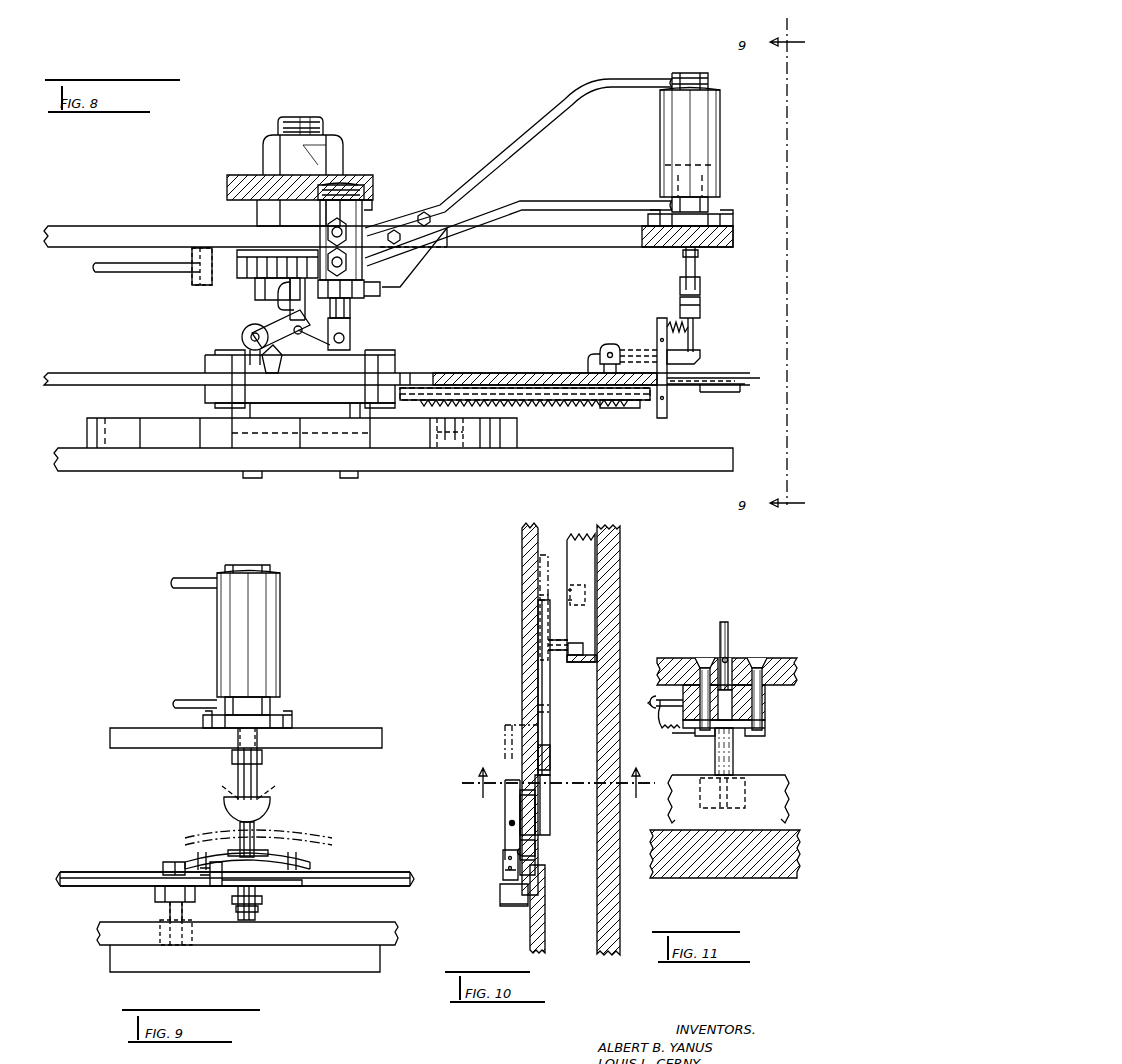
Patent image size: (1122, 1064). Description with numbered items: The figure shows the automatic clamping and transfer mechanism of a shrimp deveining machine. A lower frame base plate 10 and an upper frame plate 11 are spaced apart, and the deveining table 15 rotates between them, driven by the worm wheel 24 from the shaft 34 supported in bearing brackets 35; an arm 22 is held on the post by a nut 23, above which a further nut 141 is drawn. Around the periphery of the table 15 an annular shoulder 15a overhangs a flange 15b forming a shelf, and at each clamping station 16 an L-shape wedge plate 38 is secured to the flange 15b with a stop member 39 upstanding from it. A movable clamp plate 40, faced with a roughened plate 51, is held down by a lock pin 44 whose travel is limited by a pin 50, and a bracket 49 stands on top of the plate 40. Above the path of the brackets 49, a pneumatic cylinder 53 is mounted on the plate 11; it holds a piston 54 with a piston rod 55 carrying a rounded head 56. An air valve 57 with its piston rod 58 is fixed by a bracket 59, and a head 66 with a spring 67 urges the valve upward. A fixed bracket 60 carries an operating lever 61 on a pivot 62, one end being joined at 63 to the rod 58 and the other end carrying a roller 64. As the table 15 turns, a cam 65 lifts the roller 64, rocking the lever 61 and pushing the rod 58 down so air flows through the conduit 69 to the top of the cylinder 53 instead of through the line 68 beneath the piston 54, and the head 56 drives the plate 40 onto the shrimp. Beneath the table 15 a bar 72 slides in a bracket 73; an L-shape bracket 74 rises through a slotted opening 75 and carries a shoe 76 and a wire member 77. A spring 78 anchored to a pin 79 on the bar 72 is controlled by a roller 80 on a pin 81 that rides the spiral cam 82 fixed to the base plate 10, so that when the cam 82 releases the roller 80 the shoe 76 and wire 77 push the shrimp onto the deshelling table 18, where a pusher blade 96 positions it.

In FIG. 8, the lower frame base plate 10 is at (421, 471).
In FIG. 9, the lower frame base plate 10 is at (165, 972).
In FIG. 10, the lower frame base plate 10 is at (621, 583).
In FIG. 11, the lower frame base plate 10 is at (684, 878).
In FIG. 8, the upper frame plate 11 is at (567, 247).
In FIG. 9, the upper frame plate 11 is at (338, 732).
In FIG. 10, the upper frame plate 11 is at (558, 770).
In FIG. 8, the deveining table 15 is at (516, 373).
In FIG. 9, the deveining table 15 is at (386, 872).
In FIG. 10, the deveining table 15 is at (521, 659).
In FIG. 11, the deveining table 15 is at (670, 658).
In FIG. 9, the annular shoulder 15a is at (80, 876).
In FIG. 9, the flange 15b is at (76, 888).
In FIG. 8, the shrimp clamping station 16 is at (650, 341).
In FIG. 10, the deshelling table 18 is at (530, 942).
In FIG. 8, the arm 22 is at (268, 178).
In FIG. 8, the nut 23 is at (268, 143).
In FIG. 8, the worm wheel 24 is at (247, 258).
In FIG. 8, the shaft 34 is at (118, 273).
In FIG. 8, the bearing bracket 35 is at (195, 280).
In FIG. 8, the L-shape wedge plate 38 is at (737, 383).
In FIG. 9, the L-shape wedge plate 38 is at (300, 884).
In FIG. 10, the L-shape wedge plate 38 is at (530, 855).
In FIG. 9, the stop member 39 is at (212, 880).
In FIG. 8, the movable clamp plate 40 is at (702, 357).
In FIG. 9, the movable clamp plate 40 is at (305, 857).
In FIG. 9, the lock pin 44 is at (262, 899).
In FIG. 8, the bracket 49 is at (694, 332).
In FIG. 9, the bracket 49 is at (258, 832).
In FIG. 9, the pin 50 is at (258, 909).
In FIG. 9, the roughened plate 51 is at (300, 866).
In FIG. 8, the pneumatic cylinder 53 is at (722, 125).
In FIG. 9, the pneumatic cylinder 53 is at (281, 632).
In FIG. 8, the piston 54 is at (702, 180).
In FIG. 8, the piston rod 55 is at (700, 256).
In FIG. 9, the piston rod 55 is at (260, 754).
In FIG. 8, the head 56 is at (700, 292).
In FIG. 9, the head 56 is at (270, 808).
In FIG. 8, the air valve 57 is at (318, 243).
In FIG. 8, the piston rod 58 is at (352, 310).
In FIG. 8, the bracket 59 is at (424, 262).
In FIG. 8, the fixed bracket 60 is at (288, 292).
In FIG. 8, the operating lever 61 is at (312, 335).
In FIG. 8, the pivot 62 is at (272, 316).
In FIG. 8, the pivotal connection 63 is at (346, 338).
In FIG. 8, the roller 64 is at (242, 337).
In FIG. 8, the cam 65 is at (240, 362).
In FIG. 8, the head 66 is at (350, 186).
In FIG. 8, the spring 67 is at (366, 206).
In FIG. 8, the air line 68 is at (540, 204).
In FIG. 9, the air line 68 is at (205, 702).
In FIG. 8, the conduit 69 is at (492, 140).
In FIG. 9, the conduit 69 is at (205, 582).
In FIG. 8, the bar 72 is at (414, 396).
In FIG. 9, the bar 72 is at (156, 894).
In FIG. 10, the bar 72 is at (548, 660).
In FIG. 11, the bar 72 is at (762, 703).
In FIG. 8, the bracket 73 is at (524, 413).
In FIG. 10, the bracket 73 is at (551, 740).
In FIG. 11, the bracket 73 is at (766, 720).
In FIG. 8, the L-shape bracket 74 is at (602, 366).
In FIG. 10, the L-shape bracket 74 is at (507, 845).
In FIG. 11, the L-shape bracket 74 is at (728, 624).
In FIG. 10, the slotted opening 75 is at (535, 715).
In FIG. 11, the slotted opening 75 is at (730, 655).
In FIG. 9, the shoe 76 is at (162, 864).
In FIG. 10, the shoe 76 is at (502, 870).
In FIG. 10, the wire member 77 is at (508, 823).
In FIG. 8, the spring 78 is at (612, 408).
In FIG. 11, the spring 78 is at (683, 737).
In FIG. 11, the pin 79 is at (687, 702).
In FIG. 8, the roller 80 is at (436, 433).
In FIG. 9, the roller 80 is at (160, 932).
In FIG. 10, the roller 80 is at (578, 632).
In FIG. 11, the roller 80 is at (746, 790).
In FIG. 10, the pin 81 is at (555, 636).
In FIG. 11, the pin 81 is at (734, 748).
In FIG. 8, the spiral cam 82 is at (302, 433).
In FIG. 9, the spiral cam 82 is at (247, 933).
In FIG. 10, the spiral cam 82 is at (578, 540).
In FIG. 11, the spiral cam 82 is at (728, 799).
In FIG. 10, the pusher blade 96 is at (504, 897).
In FIG. 8, the adjusting nut 141 is at (314, 117).